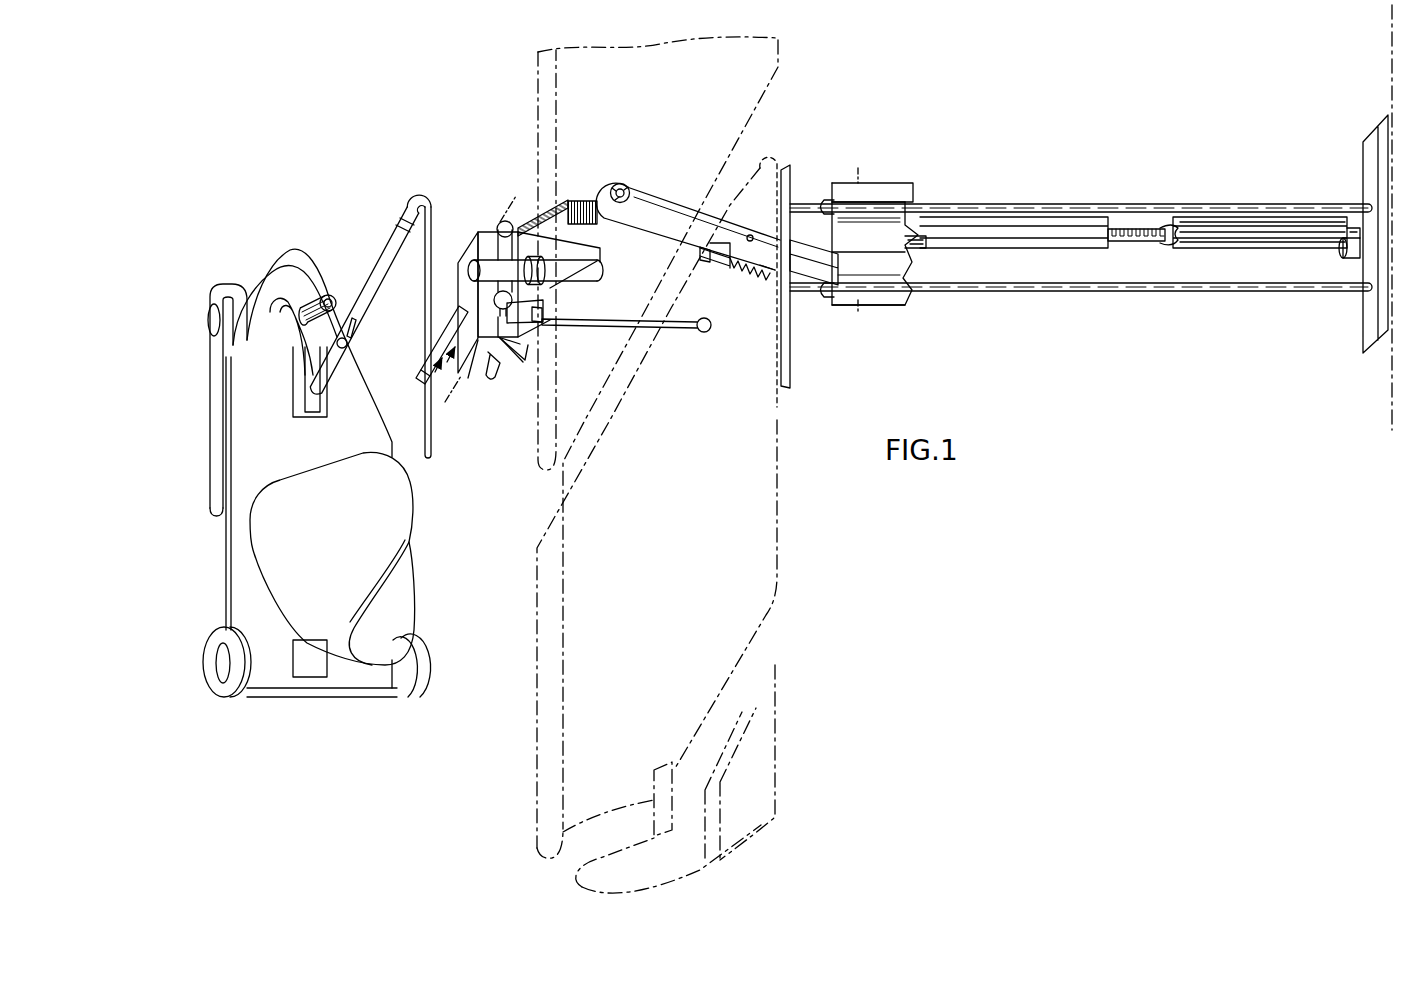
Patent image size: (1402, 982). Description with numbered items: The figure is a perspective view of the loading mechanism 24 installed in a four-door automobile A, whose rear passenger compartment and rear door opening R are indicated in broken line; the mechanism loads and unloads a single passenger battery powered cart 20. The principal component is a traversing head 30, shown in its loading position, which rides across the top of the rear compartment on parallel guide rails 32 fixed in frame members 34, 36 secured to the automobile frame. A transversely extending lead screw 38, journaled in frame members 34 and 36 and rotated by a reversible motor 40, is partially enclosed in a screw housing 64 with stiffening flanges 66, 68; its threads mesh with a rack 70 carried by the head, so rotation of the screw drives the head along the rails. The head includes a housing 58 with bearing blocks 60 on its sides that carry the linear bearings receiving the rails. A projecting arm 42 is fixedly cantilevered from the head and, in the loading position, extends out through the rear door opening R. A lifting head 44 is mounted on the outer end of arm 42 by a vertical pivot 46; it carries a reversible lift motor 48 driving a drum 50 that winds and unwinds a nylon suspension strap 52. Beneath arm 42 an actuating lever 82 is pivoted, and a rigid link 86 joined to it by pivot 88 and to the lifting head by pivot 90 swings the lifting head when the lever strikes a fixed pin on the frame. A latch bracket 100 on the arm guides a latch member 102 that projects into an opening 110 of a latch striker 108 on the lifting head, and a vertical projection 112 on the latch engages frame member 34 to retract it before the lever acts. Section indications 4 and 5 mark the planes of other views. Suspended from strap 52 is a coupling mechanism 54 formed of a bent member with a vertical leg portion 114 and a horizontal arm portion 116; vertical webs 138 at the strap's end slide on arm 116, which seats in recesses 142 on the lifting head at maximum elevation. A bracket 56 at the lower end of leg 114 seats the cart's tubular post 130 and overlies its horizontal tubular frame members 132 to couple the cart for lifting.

The cart 20 is at (212, 558).
The loading mechanism 24 is at (832, 140).
The traversing head 30 is at (915, 312).
The guide rails 32 is at (1085, 204).
The frame member 34 is at (792, 350).
The frame member 36 is at (1365, 320).
The lead screw 38 is at (1135, 241).
The reversible motor 40 is at (1352, 260).
The projecting arm 42 is at (675, 212).
The lifting head 44 is at (530, 212).
The pivot 46 is at (628, 185).
The reversible lift motor 48 is at (598, 278).
The drum 50 is at (480, 252).
The suspension strap 52 is at (458, 325).
The coupling mechanism 54 is at (392, 198).
The bracket 56 is at (287, 358).
The housing 58 is at (864, 243).
The bearing blocks 60 is at (912, 298).
The screw housing 64 is at (1237, 240).
The stiffening flange 66 is at (1222, 215).
The stiffening flange 68 is at (1210, 250).
The rack 70 is at (905, 245).
The actuating lever 82 is at (703, 296).
The rigid link 86 is at (578, 322).
The pivot 88 is at (706, 332).
The pivot 90 is at (523, 327).
The latch bracket 100 is at (700, 260).
The latch member 102 is at (753, 278).
The latch striker 108 is at (522, 342).
The opening 110 is at (548, 318).
The vertical projection 112 is at (800, 282).
The vertical leg portion 114 is at (372, 246).
The horizontal arm portion 116 is at (425, 326).
The tubular post 130 is at (322, 296).
The horizontal tubular frame members 132 is at (286, 312).
The vertical webs 138 is at (434, 405).
The recesses 142 is at (495, 360).
The section line 4- 4 is at (518, 210).
The section line 5- 5 is at (843, 158).
The automobile A is at (755, 102).
The rear door opening R is at (776, 527).